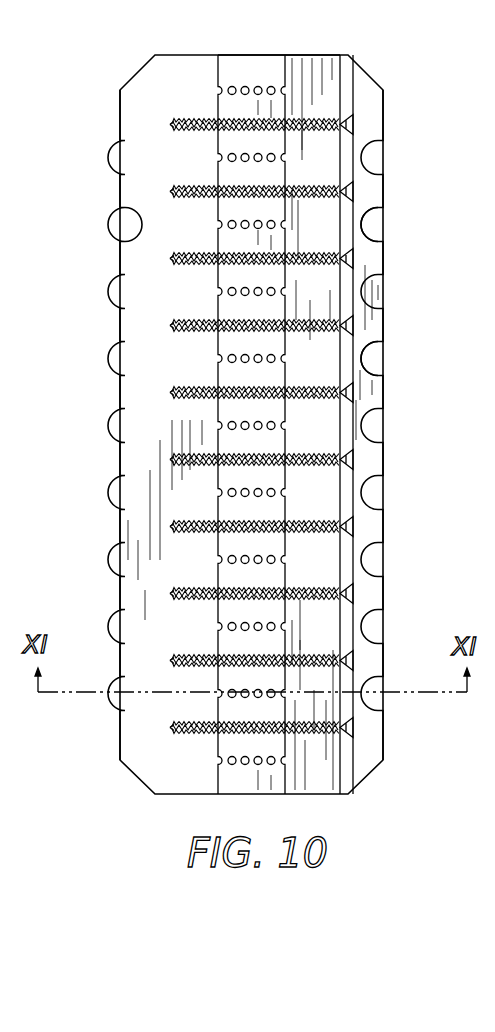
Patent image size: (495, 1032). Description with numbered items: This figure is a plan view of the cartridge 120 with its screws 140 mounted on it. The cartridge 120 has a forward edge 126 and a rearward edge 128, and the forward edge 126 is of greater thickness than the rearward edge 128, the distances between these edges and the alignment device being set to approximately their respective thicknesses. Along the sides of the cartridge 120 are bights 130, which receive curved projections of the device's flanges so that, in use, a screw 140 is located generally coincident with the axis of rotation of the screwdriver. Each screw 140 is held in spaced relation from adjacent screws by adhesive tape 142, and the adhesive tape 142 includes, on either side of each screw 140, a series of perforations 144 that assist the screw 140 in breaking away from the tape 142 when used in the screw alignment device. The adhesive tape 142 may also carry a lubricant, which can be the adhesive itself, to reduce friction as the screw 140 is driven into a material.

The cartridge 120 is at (385, 392).
The forward edge 126 is at (120, 388).
The rearward edge 128 is at (385, 463).
The bights 130 is at (139, 231).
The screw 140 is at (348, 114).
The adhesive tape 142 is at (272, 60).
The perforations 144 is at (221, 88).